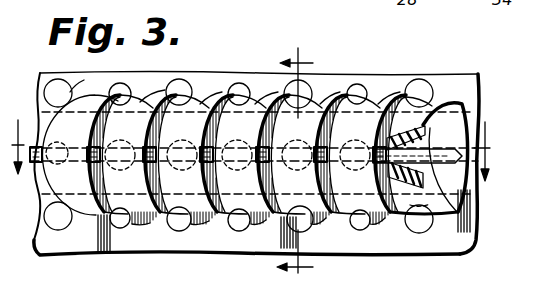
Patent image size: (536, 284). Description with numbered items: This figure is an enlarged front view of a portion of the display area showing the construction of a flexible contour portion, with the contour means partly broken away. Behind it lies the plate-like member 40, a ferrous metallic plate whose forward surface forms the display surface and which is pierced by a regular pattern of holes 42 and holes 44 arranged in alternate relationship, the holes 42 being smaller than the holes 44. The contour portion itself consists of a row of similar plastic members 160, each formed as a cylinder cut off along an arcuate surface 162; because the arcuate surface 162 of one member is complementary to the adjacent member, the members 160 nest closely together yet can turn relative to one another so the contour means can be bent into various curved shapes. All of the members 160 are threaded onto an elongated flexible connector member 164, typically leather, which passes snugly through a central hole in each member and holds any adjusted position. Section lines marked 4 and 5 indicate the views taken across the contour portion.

The plate-like member 40 is at (458, 80).
The holes 42 is at (126, 85).
The holes 44 is at (45, 80).
The members 160 is at (84, 74).
The arcuate surface 162 is at (437, 129).
The connector member 164 is at (434, 166).
The section line 4- 4 is at (281, 156).
The section line 5- 5 is at (260, 163).